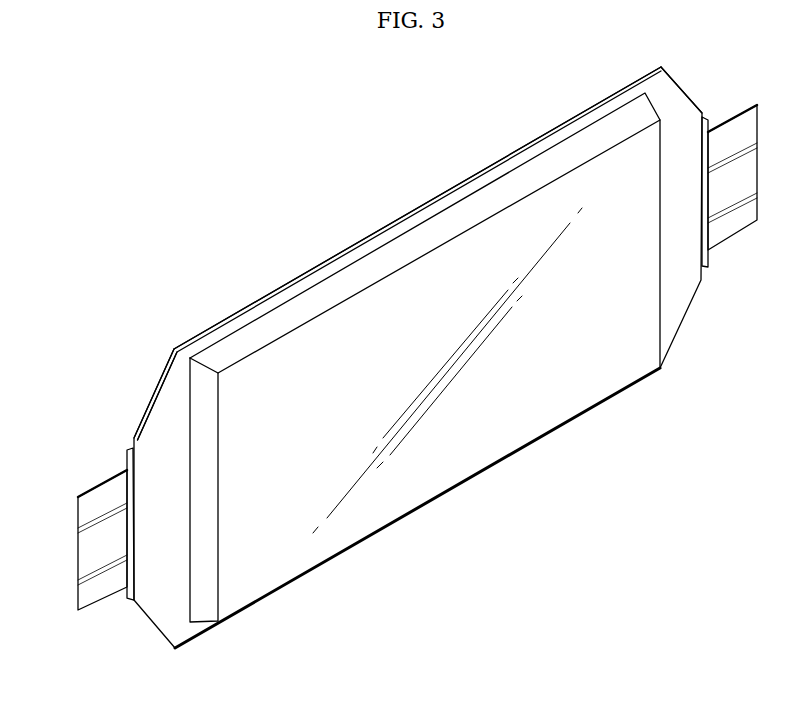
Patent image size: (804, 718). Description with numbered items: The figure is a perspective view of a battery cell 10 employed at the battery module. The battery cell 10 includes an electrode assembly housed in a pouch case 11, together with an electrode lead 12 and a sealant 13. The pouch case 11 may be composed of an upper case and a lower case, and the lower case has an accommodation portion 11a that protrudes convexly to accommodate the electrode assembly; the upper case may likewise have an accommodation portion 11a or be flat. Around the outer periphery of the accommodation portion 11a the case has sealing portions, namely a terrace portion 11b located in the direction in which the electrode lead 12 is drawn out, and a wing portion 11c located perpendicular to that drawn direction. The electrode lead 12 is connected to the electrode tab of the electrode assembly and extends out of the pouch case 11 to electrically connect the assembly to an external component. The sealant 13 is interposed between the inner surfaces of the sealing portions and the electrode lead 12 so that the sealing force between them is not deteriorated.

The battery cell 10 is at (333, 186).
The pouch case 11 is at (236, 243).
The accommodation portion 11a is at (245, 382).
The terrace portion 11b is at (167, 393).
The wing portion 11c is at (256, 299).
The electrode lead 12 is at (93, 498).
The sealant 13 is at (130, 447).